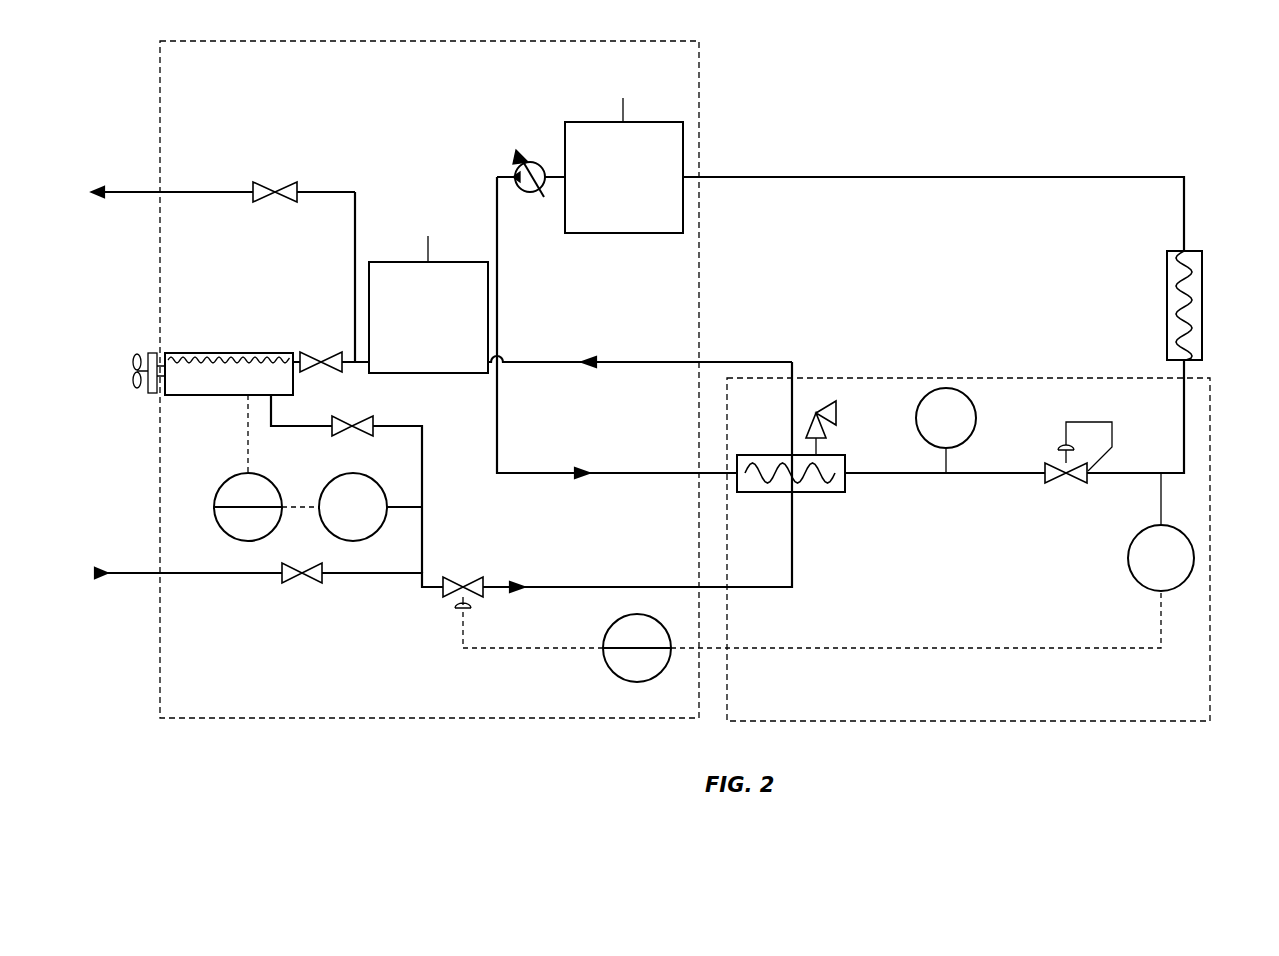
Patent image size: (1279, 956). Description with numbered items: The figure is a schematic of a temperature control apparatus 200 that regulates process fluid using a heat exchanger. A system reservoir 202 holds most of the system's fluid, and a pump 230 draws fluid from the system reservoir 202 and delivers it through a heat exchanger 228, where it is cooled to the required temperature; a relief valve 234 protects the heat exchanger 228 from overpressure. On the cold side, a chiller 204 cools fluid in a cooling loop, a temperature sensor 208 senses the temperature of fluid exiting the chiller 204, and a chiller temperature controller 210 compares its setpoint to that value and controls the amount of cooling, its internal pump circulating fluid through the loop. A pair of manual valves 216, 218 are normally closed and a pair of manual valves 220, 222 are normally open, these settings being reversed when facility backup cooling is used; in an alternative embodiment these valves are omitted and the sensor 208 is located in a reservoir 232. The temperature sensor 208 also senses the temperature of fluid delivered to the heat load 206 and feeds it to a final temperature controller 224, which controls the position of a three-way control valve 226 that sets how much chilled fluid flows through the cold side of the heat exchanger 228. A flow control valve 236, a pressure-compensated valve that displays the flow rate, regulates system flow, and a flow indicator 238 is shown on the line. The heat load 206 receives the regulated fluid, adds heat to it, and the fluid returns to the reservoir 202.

The temperature control apparatus 200 is at (965, 90).
The system reservoir 202 is at (604, 122).
The chiller 204 is at (235, 397).
The heat load 206 is at (1202, 305).
The temperature sensor 208 is at (350, 541).
The chiller temperature controller 210 is at (246, 541).
The manual valve 216 is at (278, 585).
The manual valve 218 is at (262, 185).
The manual valve 220 is at (310, 352).
The manual valve 222 is at (330, 432).
The final temperature controller 224 is at (640, 682).
The three-way control valve 226 is at (468, 597).
The heat exchanger 228 is at (845, 480).
The pump 230 is at (523, 160).
The reservoir 232 is at (376, 262).
The relief valve 234 is at (828, 410).
The flow control valve 236 is at (1043, 478).
The flow indicator FI-1 238 is at (976, 418).